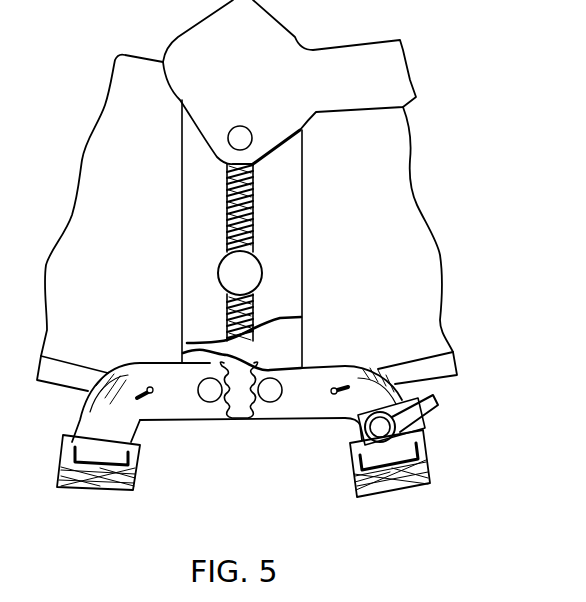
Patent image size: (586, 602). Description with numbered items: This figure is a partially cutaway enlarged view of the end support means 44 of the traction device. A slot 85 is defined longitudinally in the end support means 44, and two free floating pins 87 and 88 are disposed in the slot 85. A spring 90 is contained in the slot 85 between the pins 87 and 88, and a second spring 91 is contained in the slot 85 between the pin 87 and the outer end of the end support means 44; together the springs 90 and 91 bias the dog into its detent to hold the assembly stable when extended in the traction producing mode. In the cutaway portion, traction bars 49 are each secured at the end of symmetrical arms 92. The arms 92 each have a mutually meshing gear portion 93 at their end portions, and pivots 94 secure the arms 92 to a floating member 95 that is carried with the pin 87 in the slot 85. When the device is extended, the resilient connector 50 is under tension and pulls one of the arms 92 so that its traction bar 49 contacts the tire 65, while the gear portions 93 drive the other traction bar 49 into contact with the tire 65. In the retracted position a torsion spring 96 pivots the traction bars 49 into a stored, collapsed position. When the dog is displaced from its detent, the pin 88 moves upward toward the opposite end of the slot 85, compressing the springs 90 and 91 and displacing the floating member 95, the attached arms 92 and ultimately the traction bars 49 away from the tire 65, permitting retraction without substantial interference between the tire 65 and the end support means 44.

The end support means 44 is at (287, 240).
The traction bar 49 is at (88, 488).
The resilient connector 50 is at (413, 412).
The tire 65 is at (420, 270).
The slot 85 is at (256, 226).
The pin 87 is at (228, 270).
The pin 88 is at (236, 132).
The spring 90 is at (250, 176).
The spring 91 is at (260, 310).
The symmetrical arm 92 is at (136, 377).
The gear portion 93 is at (239, 420).
The pivot 94 is at (200, 384).
The floating member 95 is at (188, 358).
The torsion spring 96 is at (153, 393).